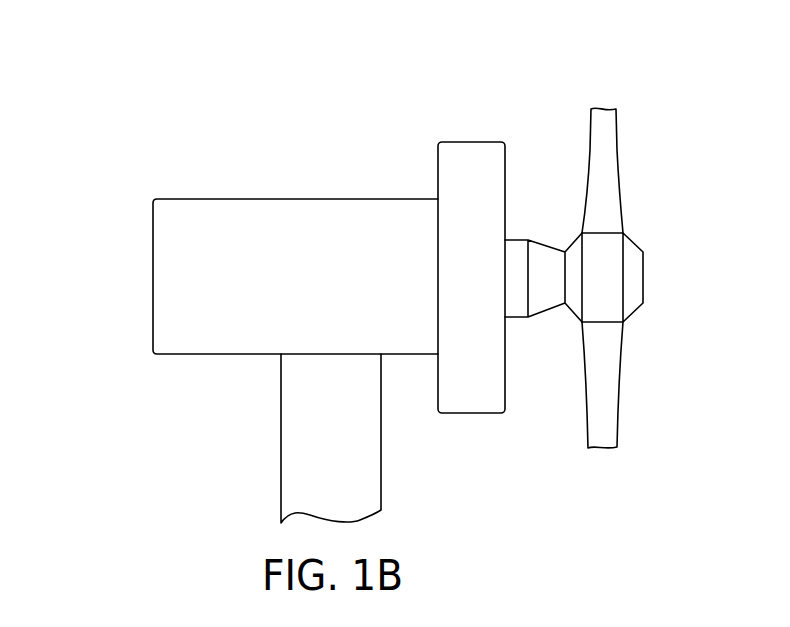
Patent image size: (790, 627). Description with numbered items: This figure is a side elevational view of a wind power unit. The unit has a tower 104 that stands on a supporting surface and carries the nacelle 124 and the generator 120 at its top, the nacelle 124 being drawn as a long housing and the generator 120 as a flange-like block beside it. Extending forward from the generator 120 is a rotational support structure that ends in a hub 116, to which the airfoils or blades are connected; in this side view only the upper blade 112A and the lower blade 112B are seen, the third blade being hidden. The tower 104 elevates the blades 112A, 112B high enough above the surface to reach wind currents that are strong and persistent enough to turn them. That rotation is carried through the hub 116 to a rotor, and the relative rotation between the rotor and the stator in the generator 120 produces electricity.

The tower 104 is at (282, 400).
The airfoil (blade) 112A is at (618, 128).
The airfoil (blade) 112B is at (588, 427).
The hub 116 is at (630, 240).
The generator 120 is at (465, 141).
The nacelle 124 is at (152, 235).